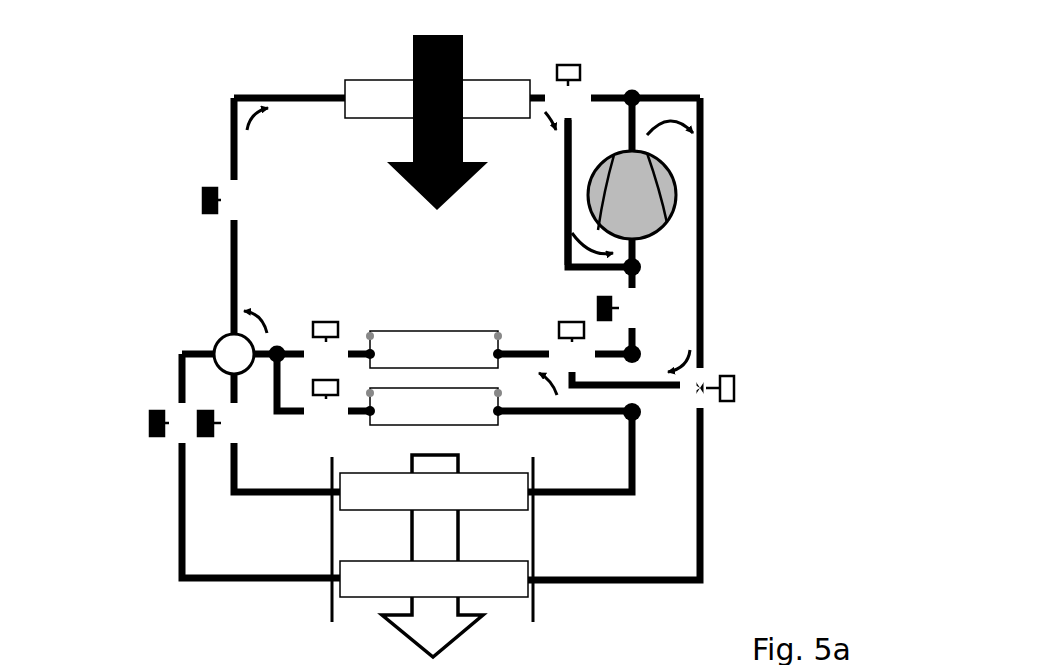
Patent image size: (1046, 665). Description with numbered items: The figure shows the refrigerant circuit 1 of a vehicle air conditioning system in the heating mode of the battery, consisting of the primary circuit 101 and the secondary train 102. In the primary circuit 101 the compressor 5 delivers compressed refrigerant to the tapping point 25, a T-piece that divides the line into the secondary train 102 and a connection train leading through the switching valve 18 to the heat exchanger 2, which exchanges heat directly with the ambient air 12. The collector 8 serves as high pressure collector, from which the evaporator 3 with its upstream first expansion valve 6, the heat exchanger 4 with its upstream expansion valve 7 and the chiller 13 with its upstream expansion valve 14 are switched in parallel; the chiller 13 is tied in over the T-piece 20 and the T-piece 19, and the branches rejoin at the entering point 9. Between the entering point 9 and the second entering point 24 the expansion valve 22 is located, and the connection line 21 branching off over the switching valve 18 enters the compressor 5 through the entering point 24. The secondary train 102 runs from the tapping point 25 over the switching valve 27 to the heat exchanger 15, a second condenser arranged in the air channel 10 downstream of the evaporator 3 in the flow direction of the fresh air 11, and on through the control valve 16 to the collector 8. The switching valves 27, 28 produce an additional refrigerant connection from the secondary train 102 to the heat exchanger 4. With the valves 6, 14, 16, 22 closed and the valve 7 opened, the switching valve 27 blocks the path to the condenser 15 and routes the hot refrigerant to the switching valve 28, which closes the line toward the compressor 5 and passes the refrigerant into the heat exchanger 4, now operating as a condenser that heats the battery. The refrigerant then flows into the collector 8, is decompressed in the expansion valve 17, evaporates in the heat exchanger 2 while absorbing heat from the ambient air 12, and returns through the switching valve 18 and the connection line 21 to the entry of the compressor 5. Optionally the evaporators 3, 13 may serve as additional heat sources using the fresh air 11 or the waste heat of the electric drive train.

The refrigerant circuit 1 is at (818, 140).
The condenser 2 is at (362, 97).
The evaporator 3 is at (492, 487).
The evaporator 4 is at (442, 338).
The compressor 5 is at (595, 185).
The first expansion valve 6 is at (238, 420).
The expansion valve 7 is at (325, 325).
The collector 8 is at (228, 342).
The entering point 9 is at (637, 351).
The air channel 10 is at (498, 607).
The fresh air 11 is at (418, 622).
The ambient air 12 is at (465, 62).
The heat exchanger 13 is at (442, 395).
The expansion valve 14 is at (324, 415).
The heat exchanger 15 is at (358, 577).
The control valve 16 is at (158, 420).
The expansion valve 17 is at (205, 195).
The switching valve 18 is at (582, 67).
The T-piece 19 is at (638, 418).
The T-piece 20 is at (279, 346).
The connection line 21 is at (565, 180).
The expansion valve 22 is at (636, 306).
The entering point 24 is at (628, 270).
The tapping point 25 is at (634, 92).
The switching valve 27 is at (735, 383).
The switching valve 28 is at (565, 327).
The primary circuit 101 is at (215, 87).
The secondary train 102 is at (703, 500).